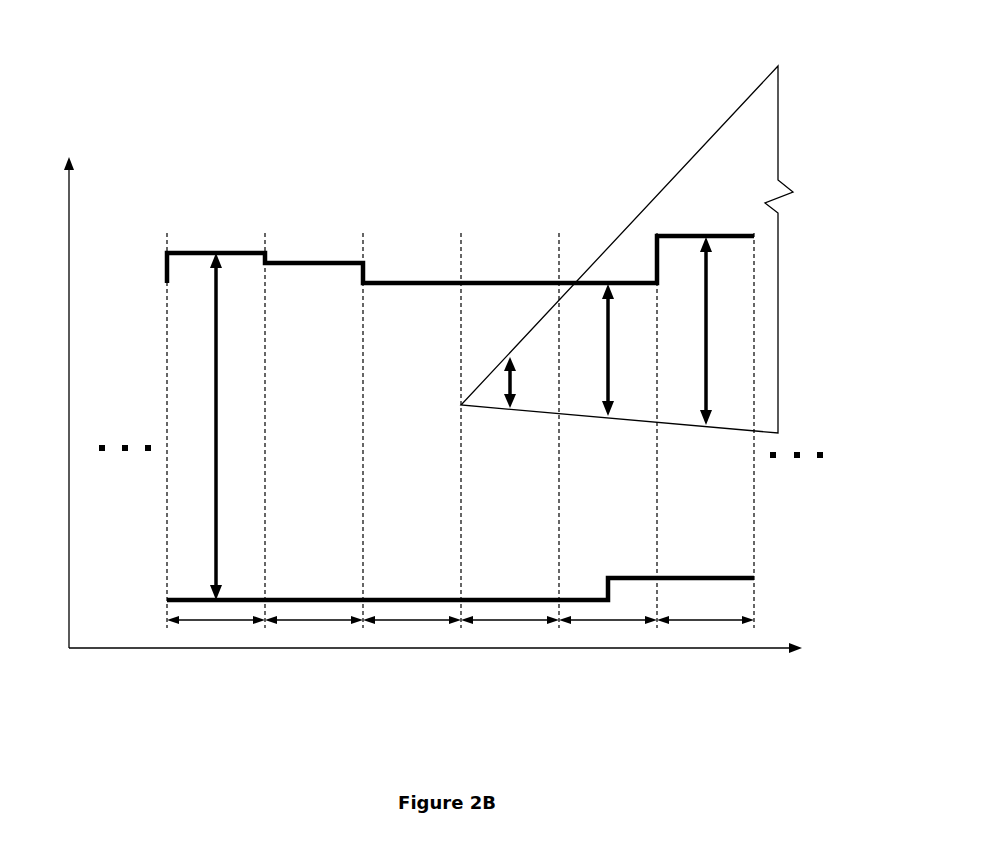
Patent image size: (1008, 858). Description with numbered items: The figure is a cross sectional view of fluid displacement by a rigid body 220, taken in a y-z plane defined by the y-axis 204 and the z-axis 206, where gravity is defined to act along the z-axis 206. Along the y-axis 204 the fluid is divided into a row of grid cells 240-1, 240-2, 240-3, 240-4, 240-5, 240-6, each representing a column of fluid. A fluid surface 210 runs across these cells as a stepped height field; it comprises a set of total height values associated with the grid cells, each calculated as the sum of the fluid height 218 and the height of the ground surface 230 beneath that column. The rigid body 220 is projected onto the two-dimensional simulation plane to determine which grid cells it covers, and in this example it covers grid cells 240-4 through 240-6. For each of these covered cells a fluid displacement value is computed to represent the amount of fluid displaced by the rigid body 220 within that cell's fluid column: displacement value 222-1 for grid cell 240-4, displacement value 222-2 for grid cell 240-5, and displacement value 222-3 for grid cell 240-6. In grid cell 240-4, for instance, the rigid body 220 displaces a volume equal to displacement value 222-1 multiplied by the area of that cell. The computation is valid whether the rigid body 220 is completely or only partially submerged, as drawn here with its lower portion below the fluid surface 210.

The y-axis 204 is at (460, 639).
The z-axis 206 is at (87, 379).
The fluid surface 210 is at (317, 262).
The fluid height 218 is at (216, 382).
The rigid body 220 is at (740, 107).
The fluid displacement value 222-1 is at (503, 380).
The fluid displacement value 222-2 is at (608, 359).
The fluid displacement value 222-3 is at (705, 345).
The ground surface 230 is at (190, 598).
The grid cell 240-1 is at (220, 622).
The grid cell 240-2 is at (287, 622).
The grid cell 240-3 is at (390, 622).
The grid cell 240-4 is at (512, 623).
The grid cell 240-5 is at (608, 623).
The grid cell 240-6 is at (703, 623).